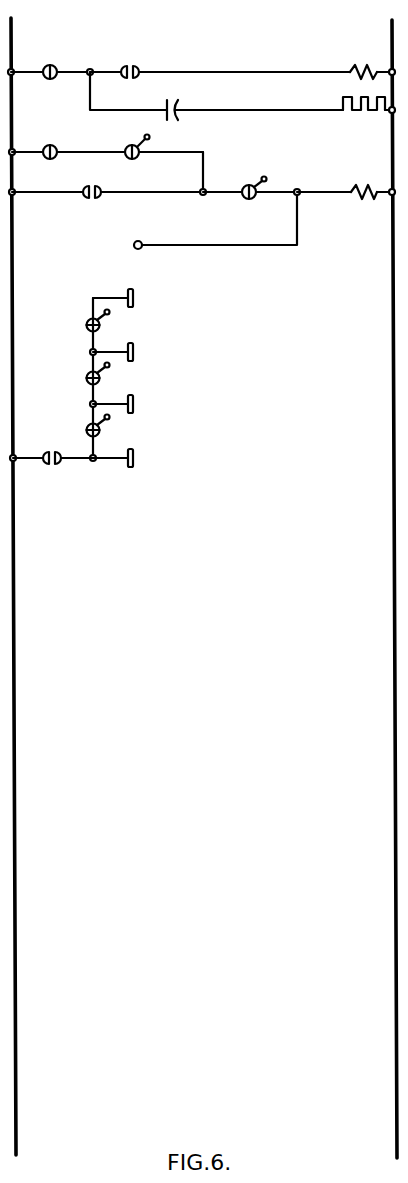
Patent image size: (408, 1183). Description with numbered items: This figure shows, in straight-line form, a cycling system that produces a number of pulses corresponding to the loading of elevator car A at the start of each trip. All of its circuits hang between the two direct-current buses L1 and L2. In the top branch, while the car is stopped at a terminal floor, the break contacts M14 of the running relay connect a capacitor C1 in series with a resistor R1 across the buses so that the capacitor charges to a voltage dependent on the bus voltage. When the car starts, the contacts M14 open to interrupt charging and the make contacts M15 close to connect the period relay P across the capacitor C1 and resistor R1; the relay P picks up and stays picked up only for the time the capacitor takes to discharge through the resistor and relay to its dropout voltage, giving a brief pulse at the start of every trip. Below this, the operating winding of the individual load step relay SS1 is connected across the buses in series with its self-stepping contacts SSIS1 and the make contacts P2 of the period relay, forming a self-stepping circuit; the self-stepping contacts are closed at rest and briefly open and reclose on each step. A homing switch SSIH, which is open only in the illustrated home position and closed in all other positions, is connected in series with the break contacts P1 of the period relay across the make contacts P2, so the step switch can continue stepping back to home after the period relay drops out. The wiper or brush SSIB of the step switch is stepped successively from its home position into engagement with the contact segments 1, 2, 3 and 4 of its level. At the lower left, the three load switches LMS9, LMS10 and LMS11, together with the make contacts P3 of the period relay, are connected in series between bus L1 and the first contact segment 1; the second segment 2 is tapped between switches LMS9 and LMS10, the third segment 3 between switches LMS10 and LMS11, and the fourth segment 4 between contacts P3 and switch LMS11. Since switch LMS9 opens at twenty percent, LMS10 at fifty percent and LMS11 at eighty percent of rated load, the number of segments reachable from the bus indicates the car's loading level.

The direct-current bus L1 is at (12, 45).
The direct-current bus L2 is at (392, 40).
The break contacts of running relay M14 is at (52, 66).
The make contacts of running relay M15 is at (123, 66).
The period relay P is at (368, 65).
The capacitor C1 is at (175, 105).
The resistor R1 is at (343, 97).
The break contacts of period relay P1 is at (50, 145).
The homing switch SSIH is at (126, 160).
The make contacts of period relay P2 is at (98, 186).
The self-stepping contacts SSIS1 is at (245, 186).
The individual load step relay SS1 is at (365, 185).
The wiper or brush SSIB is at (141, 243).
The load switch LMS9 is at (87, 327).
The load switch LMS10 is at (87, 380).
The load switch LMS11 is at (87, 432).
The make contacts of period relay P3 is at (64, 452).
The first contact segment 1 is at (113, 294).
The second contact segment 2 is at (113, 348).
The third contact segment 3 is at (113, 400).
The fourth contact segment 4 is at (113, 454).